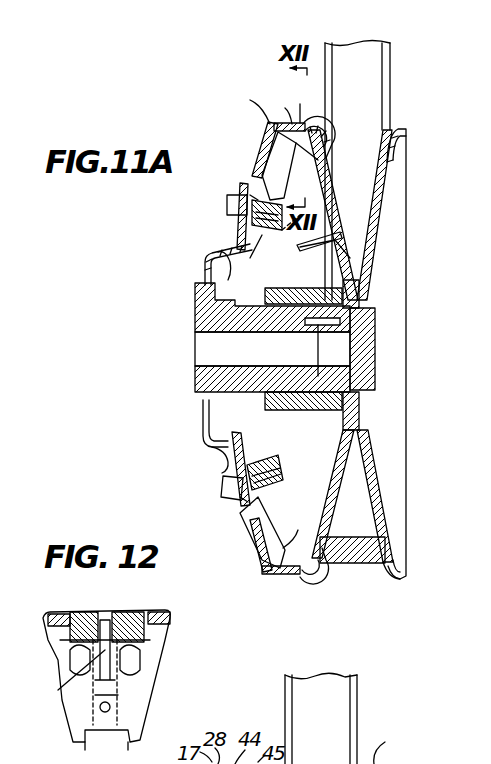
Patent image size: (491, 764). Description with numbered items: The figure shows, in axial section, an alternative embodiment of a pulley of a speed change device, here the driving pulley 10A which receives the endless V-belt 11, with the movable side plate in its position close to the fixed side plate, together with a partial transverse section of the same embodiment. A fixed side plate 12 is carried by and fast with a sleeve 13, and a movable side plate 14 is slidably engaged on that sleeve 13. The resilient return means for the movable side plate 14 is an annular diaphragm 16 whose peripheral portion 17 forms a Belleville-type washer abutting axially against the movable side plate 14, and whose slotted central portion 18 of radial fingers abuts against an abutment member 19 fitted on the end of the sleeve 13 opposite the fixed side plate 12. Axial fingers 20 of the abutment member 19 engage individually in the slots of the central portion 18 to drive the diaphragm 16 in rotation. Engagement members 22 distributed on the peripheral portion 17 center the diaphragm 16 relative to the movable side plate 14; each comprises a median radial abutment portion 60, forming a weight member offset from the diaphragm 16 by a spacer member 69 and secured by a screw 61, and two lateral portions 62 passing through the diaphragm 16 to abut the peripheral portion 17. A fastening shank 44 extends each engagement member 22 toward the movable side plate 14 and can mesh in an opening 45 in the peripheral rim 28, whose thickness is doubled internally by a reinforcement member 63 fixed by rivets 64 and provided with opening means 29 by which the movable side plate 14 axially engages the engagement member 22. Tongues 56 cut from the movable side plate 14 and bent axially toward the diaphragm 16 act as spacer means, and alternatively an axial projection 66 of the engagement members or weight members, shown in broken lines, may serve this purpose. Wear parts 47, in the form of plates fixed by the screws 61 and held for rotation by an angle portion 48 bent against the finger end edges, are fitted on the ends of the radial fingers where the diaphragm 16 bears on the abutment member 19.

In FIG. 11A, the driving pulley 10A is at (400, 112).
In FIG. 12, the driving pulley 10A is at (399, 745).
In FIG. 11A, the endless V-belt 11 is at (356, 566).
In FIG. 11A, the fixed side plate 12 is at (388, 514).
In FIG. 11A, the sleeve 13 is at (200, 379).
In FIG. 11A, the movable side plate 14 is at (338, 496).
In FIG. 12, the movable side plate 14 is at (50, 612).
In FIG. 11A, the diaphragm 16 is at (262, 140).
In FIG. 12, the diaphragm 16 is at (50, 652).
In FIG. 11A, the peripheral portion 17 is at (251, 104).
In FIG. 12, the peripheral portion 17 is at (160, 648).
In FIG. 11A, the central portion 18 is at (234, 215).
In FIG. 12, the central portion 18 is at (100, 745).
In FIG. 11A, the abutment member 19 is at (205, 434).
In FIG. 11A, the axial fingers 20 is at (263, 259).
In FIG. 11A, the engagement member 22 is at (320, 157).
In FIG. 12, the engagement member 22 is at (71, 682).
In FIG. 11A, the peripheral rim 28 is at (277, 104).
In FIG. 12, the peripheral rim 28 is at (165, 620).
In FIG. 11A, the opening means 29 is at (320, 140).
In FIG. 12, the opening means 29 is at (100, 612).
In FIG. 11A, the fastening shank 44 is at (302, 124).
In FIG. 12, the fastening shank 44 is at (108, 612).
In FIG. 11A, the opening 45 is at (277, 578).
In FIG. 12, the opening 45 is at (128, 612).
In FIG. 11A, the wear parts 47 is at (226, 252).
In FIG. 11A, the angle portion 48 is at (236, 432).
In FIG. 11A, the tongues 56 is at (335, 243).
In FIG. 11A, the median radial abutment portion 60 is at (283, 214).
In FIG. 12, the median radial abutment portion 60 is at (112, 708).
In FIG. 11A, the screw 61 is at (232, 202).
In FIG. 12, the screw 61 is at (120, 698).
In FIG. 11A, the lateral portions 62 is at (262, 168).
In FIG. 12, the lateral portions 62 is at (70, 665).
In FIG. 11A, the reinforcement member 63 is at (275, 145).
In FIG. 12, the reinforcement member 63 is at (158, 632).
In FIG. 12, the rivets 64 is at (68, 612).
In FIG. 11A, the axial projection 66 is at (300, 246).
In FIG. 11A, the spacer member 69 is at (252, 196).